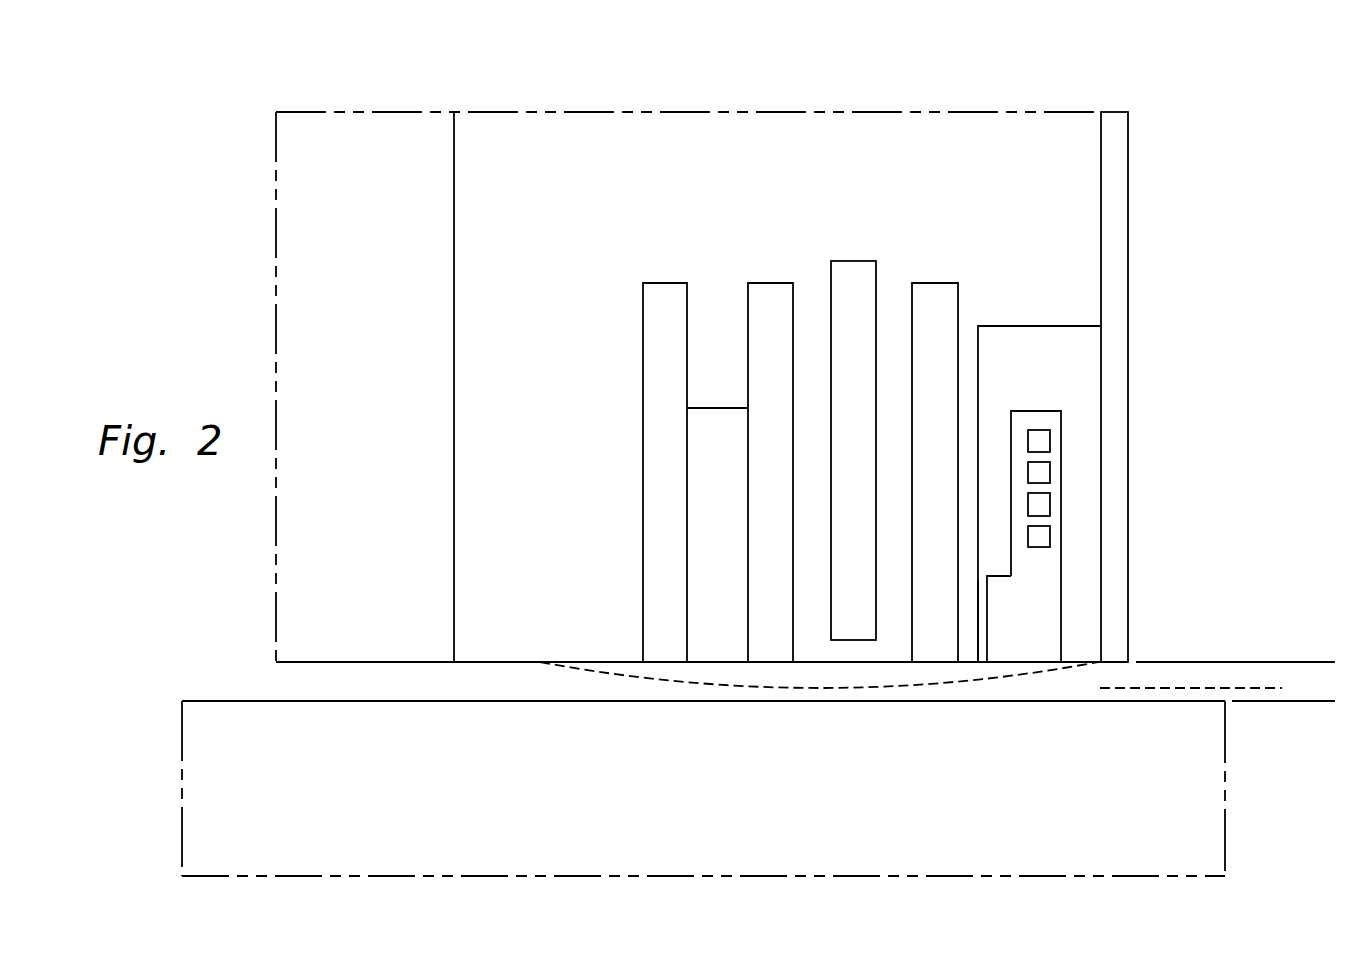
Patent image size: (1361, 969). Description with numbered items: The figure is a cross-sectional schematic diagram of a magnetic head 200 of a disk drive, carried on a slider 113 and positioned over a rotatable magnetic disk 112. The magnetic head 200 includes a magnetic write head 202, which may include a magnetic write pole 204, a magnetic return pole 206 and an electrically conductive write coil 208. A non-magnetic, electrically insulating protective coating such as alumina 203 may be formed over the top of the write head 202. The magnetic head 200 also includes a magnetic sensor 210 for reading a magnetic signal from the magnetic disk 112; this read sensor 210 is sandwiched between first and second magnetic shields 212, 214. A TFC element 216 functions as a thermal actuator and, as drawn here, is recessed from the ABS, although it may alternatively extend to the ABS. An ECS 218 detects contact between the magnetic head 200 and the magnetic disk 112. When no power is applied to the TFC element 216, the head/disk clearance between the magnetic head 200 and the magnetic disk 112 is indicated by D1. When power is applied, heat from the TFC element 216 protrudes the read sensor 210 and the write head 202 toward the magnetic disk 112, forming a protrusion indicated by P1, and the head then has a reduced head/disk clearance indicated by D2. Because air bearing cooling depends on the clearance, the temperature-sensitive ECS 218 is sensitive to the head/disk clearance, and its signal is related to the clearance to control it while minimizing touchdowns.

The magnetic head 200 is at (233, 92).
The slider 113 is at (396, 120).
The alumina 203 is at (1116, 120).
The second magnetic shield 214 is at (665, 283).
The first magnetic shield 212 is at (770, 283).
The magnetic sensor 210 is at (707, 408).
The TFC element 216 is at (851, 261).
The ECS 218 is at (934, 283).
The magnetic write head 202 is at (1027, 326).
The electrically conductive write coil 208 is at (1038, 440).
The magnetic write pole 204 is at (983, 604).
The magnetic return pole 206 is at (1086, 622).
The magnetic disk 112 is at (1215, 838).
The air bearing surface ABS is at (818, 668).
The protrusion P1 is at (980, 665).
The head/disk clearance D1 is at (1326, 627).
The reduced head/disk clearance D2 is at (1273, 653).